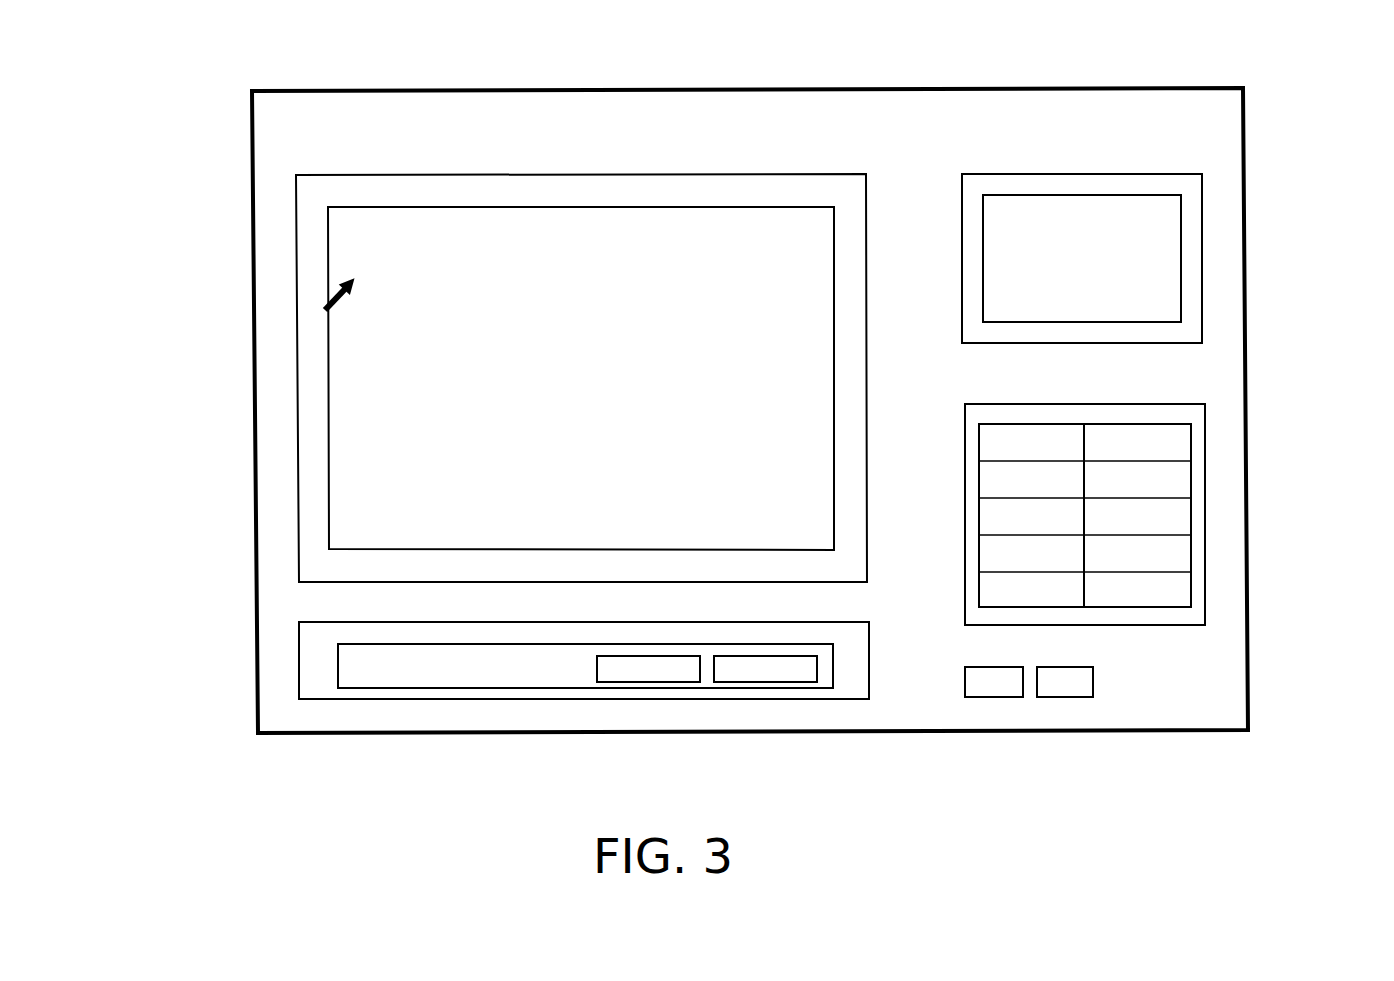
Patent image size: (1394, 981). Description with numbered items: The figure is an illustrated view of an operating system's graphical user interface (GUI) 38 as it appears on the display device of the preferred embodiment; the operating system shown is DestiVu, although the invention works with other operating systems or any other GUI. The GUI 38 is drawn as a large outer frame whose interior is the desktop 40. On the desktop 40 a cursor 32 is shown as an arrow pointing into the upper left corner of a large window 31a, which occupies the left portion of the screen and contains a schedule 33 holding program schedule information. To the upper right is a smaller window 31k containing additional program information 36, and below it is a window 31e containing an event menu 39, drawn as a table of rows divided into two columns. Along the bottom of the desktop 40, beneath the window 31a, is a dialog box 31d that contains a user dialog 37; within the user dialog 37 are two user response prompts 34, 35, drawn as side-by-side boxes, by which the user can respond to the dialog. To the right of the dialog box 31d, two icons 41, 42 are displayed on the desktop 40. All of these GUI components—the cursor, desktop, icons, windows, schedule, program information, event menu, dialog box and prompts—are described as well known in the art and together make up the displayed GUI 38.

The graphical user interface 38 is at (250, 117).
The desktop 40 is at (280, 137).
The window 31a is at (307, 213).
The cursor 32 is at (330, 297).
The schedule 33 is at (330, 400).
The window 31k is at (1193, 193).
The additional program information 36 is at (1160, 240).
The window 31e is at (1203, 433).
The event menu 39 is at (1173, 513).
The dialog box 31d is at (315, 662).
The user dialog 37 is at (393, 690).
The user response prompt 34 is at (658, 670).
The user response prompt 35 is at (748, 780).
The icon 41 is at (991, 685).
The icon 42 is at (1052, 690).